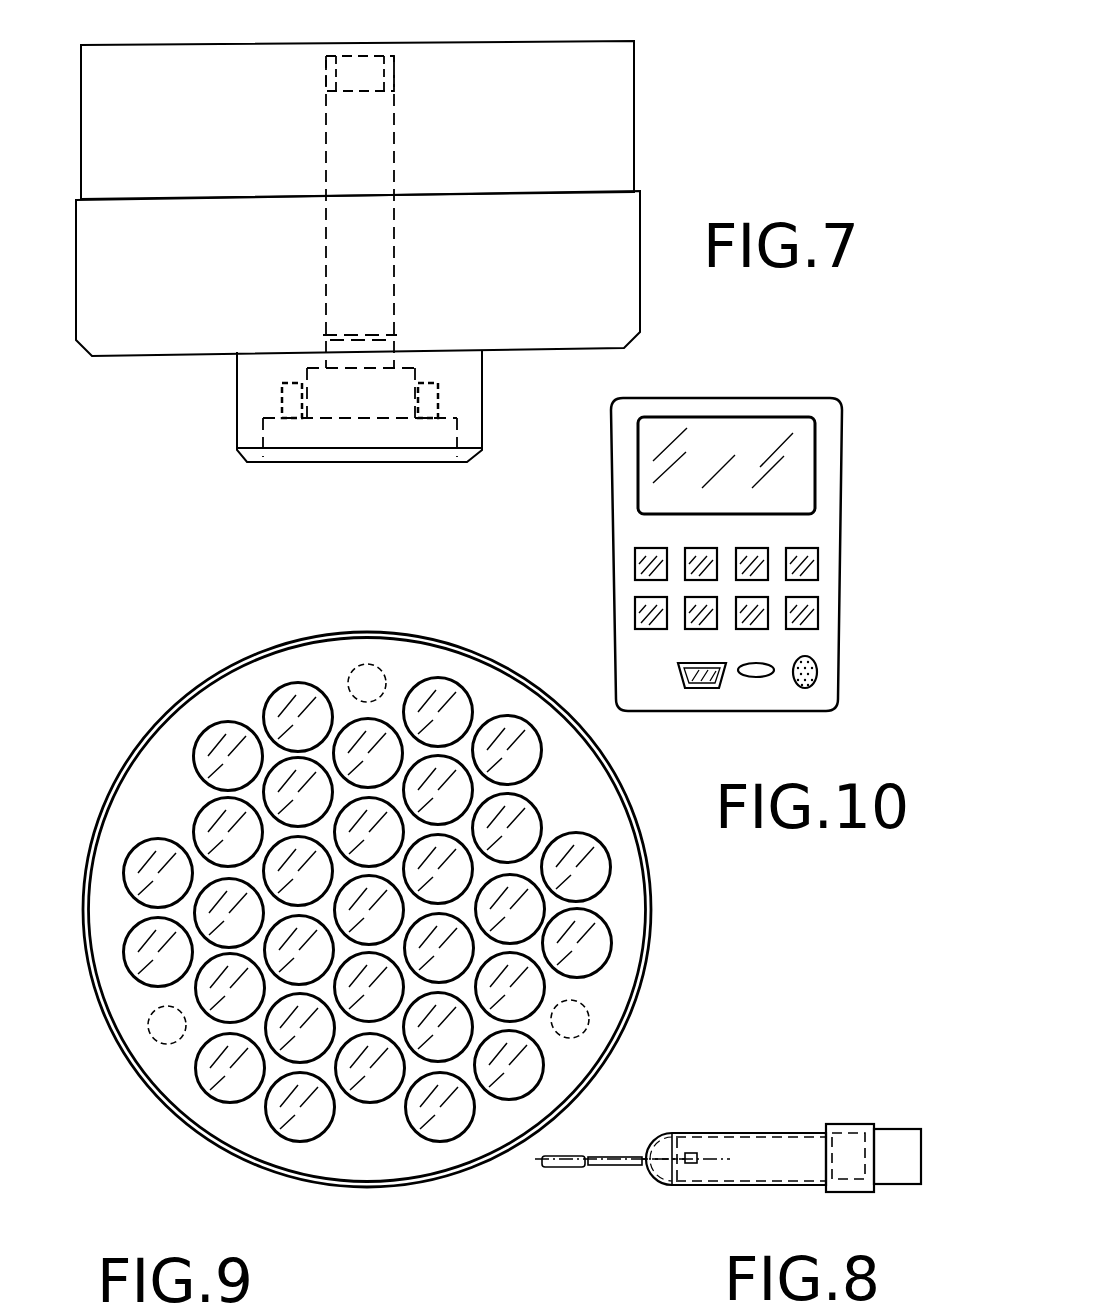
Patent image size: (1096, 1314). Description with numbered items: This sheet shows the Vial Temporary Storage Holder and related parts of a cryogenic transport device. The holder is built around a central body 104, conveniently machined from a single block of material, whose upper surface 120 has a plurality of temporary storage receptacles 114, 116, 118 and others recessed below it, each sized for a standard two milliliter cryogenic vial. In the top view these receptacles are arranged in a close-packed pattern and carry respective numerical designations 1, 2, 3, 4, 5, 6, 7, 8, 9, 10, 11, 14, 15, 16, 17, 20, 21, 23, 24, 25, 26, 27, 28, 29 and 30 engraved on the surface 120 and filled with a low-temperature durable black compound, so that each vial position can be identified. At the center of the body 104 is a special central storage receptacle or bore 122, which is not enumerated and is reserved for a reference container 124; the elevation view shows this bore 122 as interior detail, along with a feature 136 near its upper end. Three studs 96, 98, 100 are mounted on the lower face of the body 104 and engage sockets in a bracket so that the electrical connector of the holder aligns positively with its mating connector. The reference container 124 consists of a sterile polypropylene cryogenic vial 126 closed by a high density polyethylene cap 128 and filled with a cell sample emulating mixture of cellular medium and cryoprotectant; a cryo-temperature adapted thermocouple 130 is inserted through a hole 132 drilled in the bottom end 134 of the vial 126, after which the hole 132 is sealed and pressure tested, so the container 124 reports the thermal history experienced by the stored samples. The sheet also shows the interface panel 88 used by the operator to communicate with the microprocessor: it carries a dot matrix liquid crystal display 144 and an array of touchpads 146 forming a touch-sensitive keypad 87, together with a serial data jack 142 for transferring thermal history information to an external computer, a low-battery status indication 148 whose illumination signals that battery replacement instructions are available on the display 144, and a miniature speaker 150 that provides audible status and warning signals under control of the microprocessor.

In FIG. 7, the upper surface 120 is at (580, 40).
In FIG. 9, the upper surface 120 is at (170, 757).
In FIG. 7, the central body 104 is at (635, 157).
In FIG. 9, the central body 104 is at (414, 909).
In FIG. 7, the special central storage receptacle 122 is at (344, 113).
In FIG. 9, the special central storage receptacle 122 is at (368, 930).
In FIG. 7, the opening 136 is at (378, 70).
In FIG. 9, the temporary storage receptacle 114 is at (265, 707).
In FIG. 9, the temporary storage receptacle 116 is at (417, 687).
In FIG. 9, the temporary storage receptacle 118 is at (497, 722).
In FIG. 9, the stud 98 is at (343, 670).
In FIG. 9, the stud 96 is at (147, 1032).
In FIG. 9, the stud 100 is at (586, 1012).
In FIG. 10, the keypad 87 is at (728, 566).
In FIG. 10, the interface panel 88 is at (833, 452).
In FIG. 10, the liquid crystal display 144 is at (773, 423).
In FIG. 10, the touchpad 146 is at (641, 548).
In FIG. 10, the RS-232 jack 142 is at (693, 688).
In FIG. 10, the low-battery status indication 148 is at (753, 677).
In FIG. 10, the miniature speaker 150 is at (814, 660).
In FIG. 8, the reference container 124 is at (741, 1149).
In FIG. 8, the cryogenic vial 126 is at (709, 1129).
In FIG. 8, the cap 128 is at (887, 1129).
In FIG. 8, the bottom end 134 is at (648, 1153).
In FIG. 8, the hole 132 is at (637, 1166).
In FIG. 8, the thermocouple 130 is at (691, 1164).
In FIG. 9, the numerical designation 1 is at (257, 686).
In FIG. 9, the numerical designation 2 is at (474, 672).
In FIG. 9, the numerical designation 3 is at (224, 752).
In FIG. 9, the numerical designation 4 is at (368, 745).
In FIG. 9, the numerical designation 5 is at (544, 722).
In FIG. 9, the numerical designation 6 is at (289, 792).
In FIG. 9, the numerical designation 7 is at (446, 790).
In FIG. 9, the numerical designation 8 is at (219, 832).
In FIG. 9, the numerical designation 9 is at (360, 832).
In FIG. 9, the numerical designation 10 is at (519, 828).
In FIG. 9, the numerical designation 11 is at (147, 873).
In FIG. 9, the numerical designation 14 is at (586, 866).
In FIG. 9, the numerical designation 15 is at (218, 913).
In FIG. 9, the numerical designation 16 is at (521, 909).
In FIG. 9, the numerical designation 17 is at (147, 952).
In FIG. 9, the numerical designation 20 is at (590, 943).
In FIG. 9, the numerical designation 21 is at (217, 988).
In FIG. 9, the numerical designation 23 is at (523, 987).
In FIG. 9, the numerical designation 24 is at (289, 1028).
In FIG. 9, the numerical designation 25 is at (452, 1027).
In FIG. 9, the numerical designation 26 is at (230, 1079).
In FIG. 9, the numerical designation 27 is at (370, 1079).
In FIG. 9, the numerical designation 28 is at (509, 1076).
In FIG. 9, the numerical designation 29 is at (300, 1118).
In FIG. 9, the numerical designation 30 is at (440, 1118).